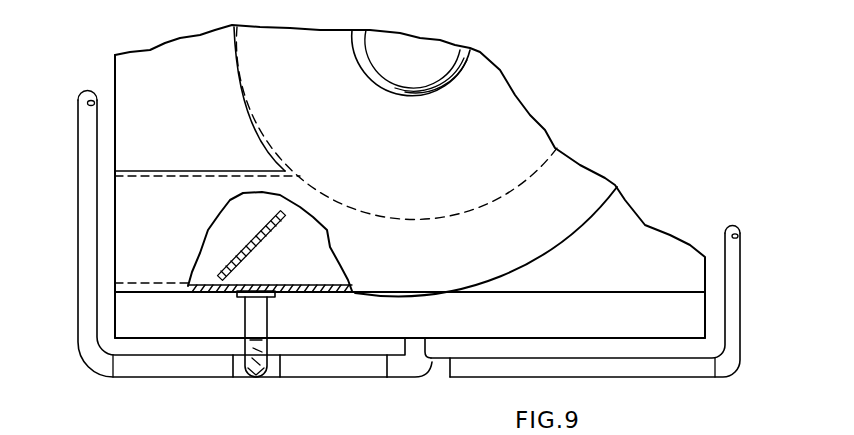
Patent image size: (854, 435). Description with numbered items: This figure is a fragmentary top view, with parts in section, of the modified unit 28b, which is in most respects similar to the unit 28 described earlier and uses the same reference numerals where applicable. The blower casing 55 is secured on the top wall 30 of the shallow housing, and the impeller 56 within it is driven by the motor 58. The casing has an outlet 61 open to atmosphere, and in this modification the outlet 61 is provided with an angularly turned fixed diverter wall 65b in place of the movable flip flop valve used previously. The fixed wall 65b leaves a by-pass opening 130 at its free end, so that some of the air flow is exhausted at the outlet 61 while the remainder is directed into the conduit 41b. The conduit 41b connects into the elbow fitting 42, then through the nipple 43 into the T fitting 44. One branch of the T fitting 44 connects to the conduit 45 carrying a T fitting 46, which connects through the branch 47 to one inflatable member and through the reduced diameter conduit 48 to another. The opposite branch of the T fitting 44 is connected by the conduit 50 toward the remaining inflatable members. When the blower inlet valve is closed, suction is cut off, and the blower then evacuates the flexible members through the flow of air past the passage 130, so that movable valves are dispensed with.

The unit 28 is at (547, 91).
The modified unit 28b is at (118, 44).
The top wall 30 is at (610, 284).
The conduit 41b is at (263, 318).
The elbow fitting 42 is at (256, 338).
The nipple 43 is at (280, 372).
The T fitting 44 is at (240, 378).
The conduit 45 is at (374, 374).
The T fitting 46 is at (430, 369).
The branch 47 is at (420, 348).
The reduced diameter conduit 48 is at (742, 300).
The conduit 50 is at (78, 215).
The blower casing 55 is at (618, 186).
The impeller 56 is at (420, 220).
The motor 58 is at (417, 100).
The outlet 61 is at (178, 180).
The fixed diverter wall 65b is at (248, 246).
The by-pass opening 130 is at (290, 205).